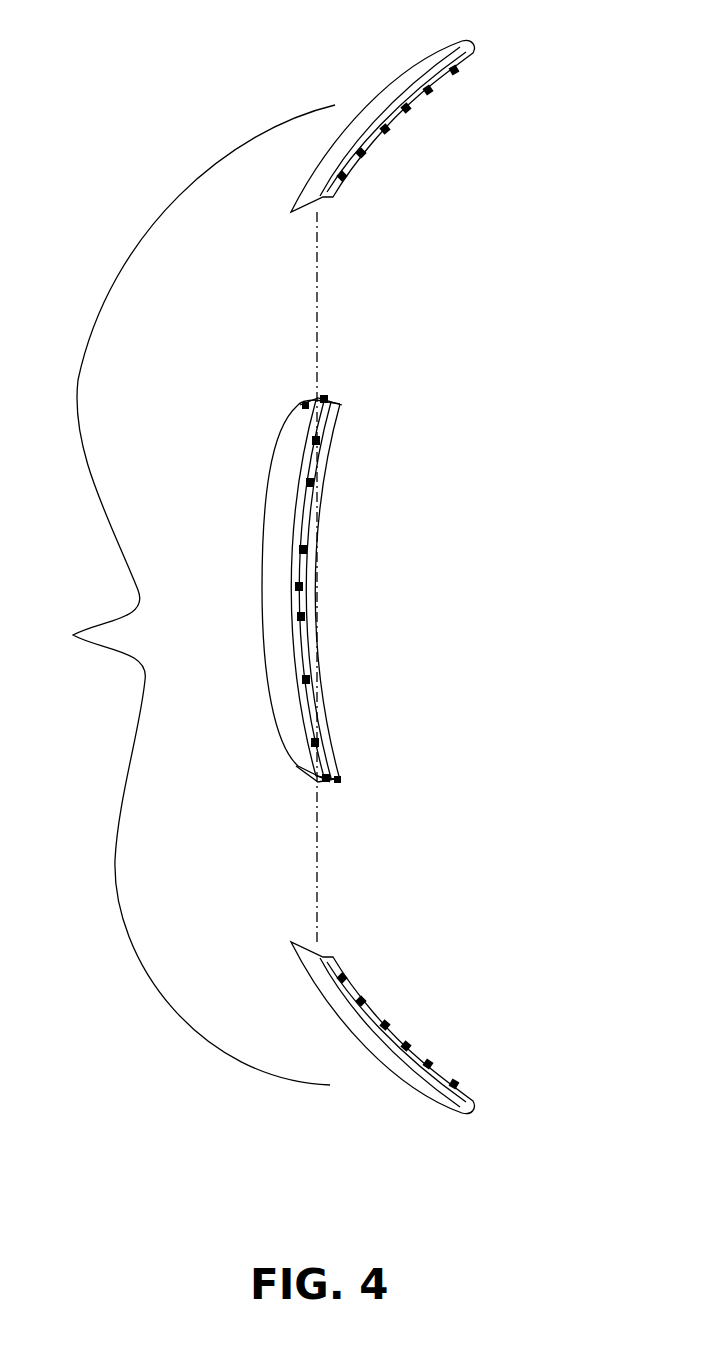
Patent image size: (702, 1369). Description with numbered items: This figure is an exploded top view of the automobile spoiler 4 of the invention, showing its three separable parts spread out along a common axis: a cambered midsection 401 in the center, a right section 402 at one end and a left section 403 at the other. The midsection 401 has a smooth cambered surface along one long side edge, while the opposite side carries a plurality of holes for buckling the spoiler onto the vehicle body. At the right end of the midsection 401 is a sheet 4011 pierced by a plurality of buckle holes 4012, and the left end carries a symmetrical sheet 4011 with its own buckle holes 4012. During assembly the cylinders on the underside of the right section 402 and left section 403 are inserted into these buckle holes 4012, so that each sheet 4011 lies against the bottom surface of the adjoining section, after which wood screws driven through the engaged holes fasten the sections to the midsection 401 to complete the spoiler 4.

The spoiler 4 is at (193, 595).
The midsection 401 is at (320, 598).
The right section 402 is at (392, 125).
The left section 403 is at (385, 1028).
The sheet 4011 is at (336, 400).
The buckle holes 4012 is at (318, 398).